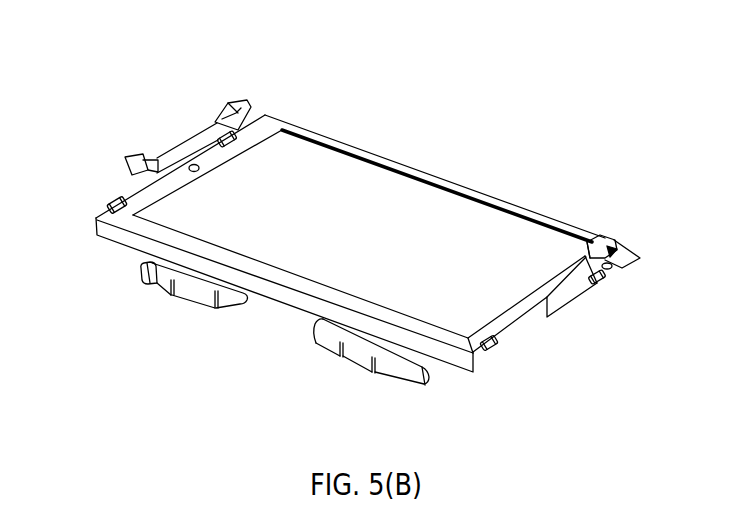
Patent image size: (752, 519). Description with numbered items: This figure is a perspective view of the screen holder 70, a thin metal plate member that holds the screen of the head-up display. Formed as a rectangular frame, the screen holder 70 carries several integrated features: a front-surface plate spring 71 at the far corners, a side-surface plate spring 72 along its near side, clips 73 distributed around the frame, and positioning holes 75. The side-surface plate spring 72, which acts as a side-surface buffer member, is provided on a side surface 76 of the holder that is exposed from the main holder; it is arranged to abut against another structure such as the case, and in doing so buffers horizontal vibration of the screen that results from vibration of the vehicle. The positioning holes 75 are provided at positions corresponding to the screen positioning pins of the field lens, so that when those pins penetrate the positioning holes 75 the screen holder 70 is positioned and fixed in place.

The screen holder 70 is at (531, 320).
The front-surface plate spring 71 is at (227, 107).
The side-surface plate spring 72 is at (162, 294).
The clip 73 is at (107, 202).
The positioning holes 75 is at (182, 166).
The side surface 76 is at (463, 365).